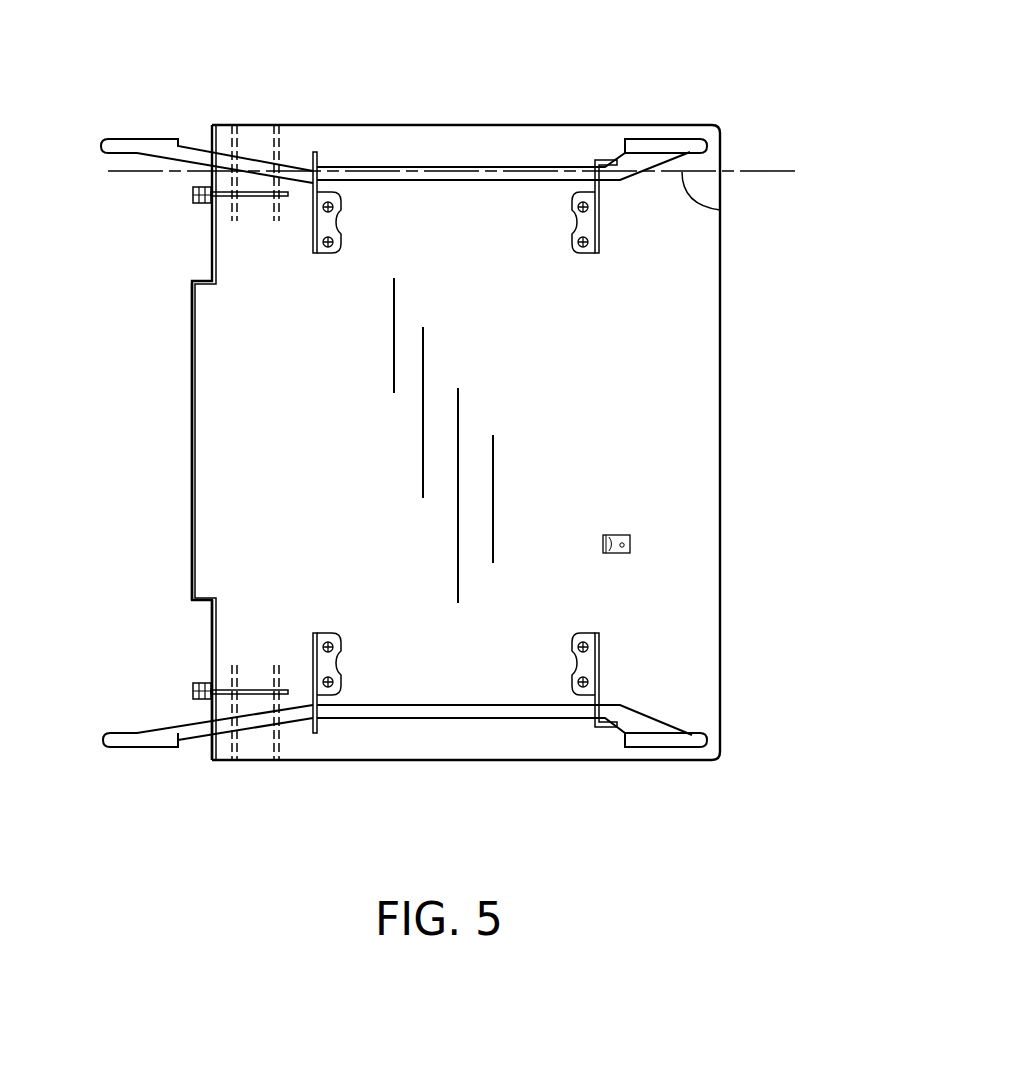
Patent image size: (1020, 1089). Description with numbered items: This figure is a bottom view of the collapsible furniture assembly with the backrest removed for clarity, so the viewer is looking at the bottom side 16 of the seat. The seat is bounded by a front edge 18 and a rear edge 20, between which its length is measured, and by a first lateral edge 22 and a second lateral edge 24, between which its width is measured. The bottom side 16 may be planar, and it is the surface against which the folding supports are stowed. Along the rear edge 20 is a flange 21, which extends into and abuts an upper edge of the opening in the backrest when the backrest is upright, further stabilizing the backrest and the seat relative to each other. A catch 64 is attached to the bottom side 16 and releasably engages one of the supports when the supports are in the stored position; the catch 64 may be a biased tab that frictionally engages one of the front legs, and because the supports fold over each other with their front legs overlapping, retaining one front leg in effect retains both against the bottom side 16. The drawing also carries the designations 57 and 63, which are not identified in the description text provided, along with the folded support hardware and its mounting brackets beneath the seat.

The bottom side 16 is at (473, 436).
The front edge 18 is at (721, 645).
The rear edge 20 is at (212, 643).
The flange 21 is at (192, 415).
The first lateral edge 22 is at (508, 125).
The second lateral edge 24 is at (533, 762).
The pivot axis 57 is at (762, 171).
The hook 63 is at (690, 197).
The catch 64 is at (630, 547).